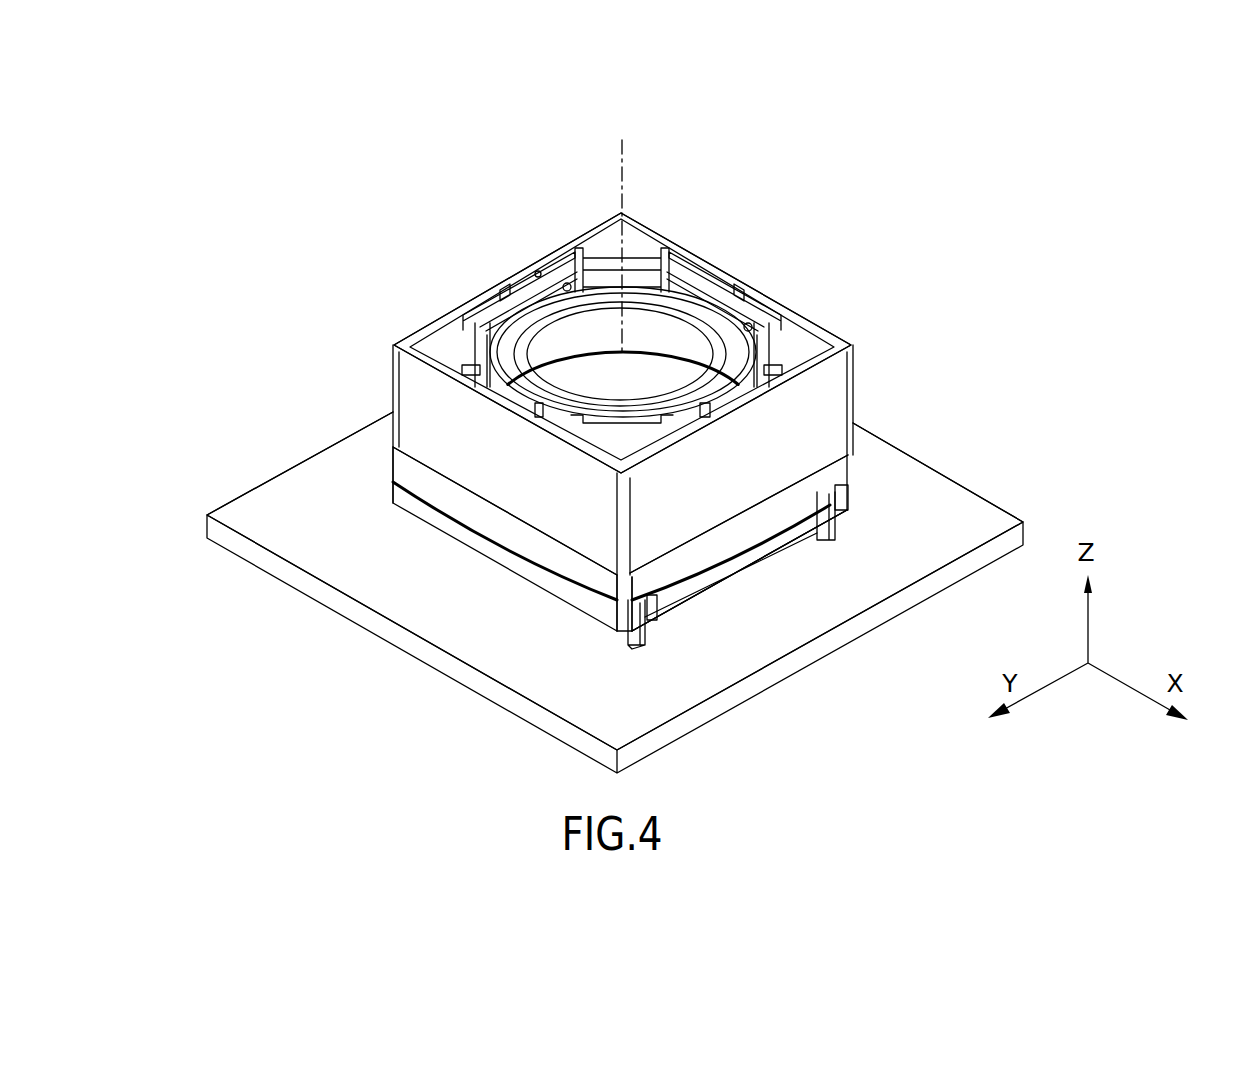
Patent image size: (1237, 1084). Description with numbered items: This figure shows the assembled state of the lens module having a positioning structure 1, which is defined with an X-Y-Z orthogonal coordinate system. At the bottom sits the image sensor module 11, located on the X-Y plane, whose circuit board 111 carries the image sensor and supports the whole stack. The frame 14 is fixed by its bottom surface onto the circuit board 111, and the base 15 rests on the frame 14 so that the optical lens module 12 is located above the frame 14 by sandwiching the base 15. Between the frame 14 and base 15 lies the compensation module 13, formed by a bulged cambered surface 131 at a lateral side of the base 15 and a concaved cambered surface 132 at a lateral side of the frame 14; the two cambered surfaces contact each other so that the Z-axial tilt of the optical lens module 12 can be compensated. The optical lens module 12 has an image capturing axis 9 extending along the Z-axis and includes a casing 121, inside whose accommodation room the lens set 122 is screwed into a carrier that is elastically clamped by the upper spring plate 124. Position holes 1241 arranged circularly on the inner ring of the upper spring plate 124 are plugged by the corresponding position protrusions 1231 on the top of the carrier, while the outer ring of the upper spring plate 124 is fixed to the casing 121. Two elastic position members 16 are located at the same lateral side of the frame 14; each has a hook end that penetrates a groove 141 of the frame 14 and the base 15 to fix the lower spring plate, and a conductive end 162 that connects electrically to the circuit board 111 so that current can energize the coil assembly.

The lens module having a positioning structure 1 is at (588, 467).
The image capturing axis 9 is at (624, 183).
The image sensor module 11 is at (640, 585).
The circuit board 111 is at (912, 478).
The optical lens module 12 is at (659, 385).
The casing 121 is at (798, 335).
The lens set 122 is at (678, 328).
The upper spring plate 124 is at (592, 303).
The position protrusions 1231 is at (570, 282).
The position holes 1241 is at (555, 285).
The compensation module 13 is at (524, 506).
The bulged cambered surface 131 is at (397, 468).
The concaved cambered surface 132 is at (400, 483).
The frame 14 is at (801, 610).
The groove 141 is at (848, 495).
The base 15 is at (732, 563).
The elastic position member 16 is at (776, 640).
The conductive end 162 is at (776, 640).